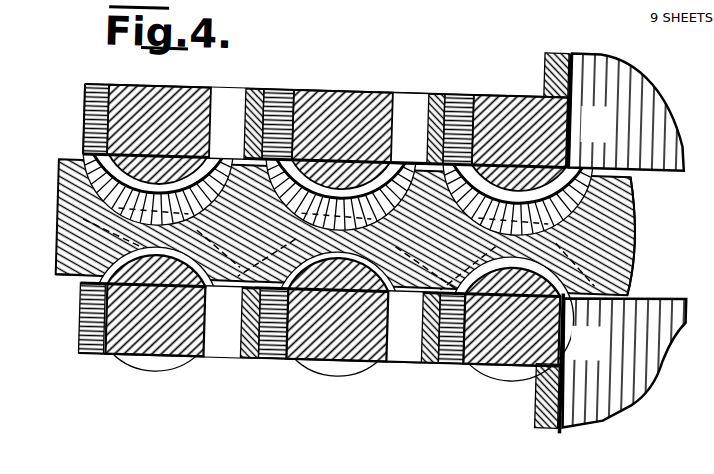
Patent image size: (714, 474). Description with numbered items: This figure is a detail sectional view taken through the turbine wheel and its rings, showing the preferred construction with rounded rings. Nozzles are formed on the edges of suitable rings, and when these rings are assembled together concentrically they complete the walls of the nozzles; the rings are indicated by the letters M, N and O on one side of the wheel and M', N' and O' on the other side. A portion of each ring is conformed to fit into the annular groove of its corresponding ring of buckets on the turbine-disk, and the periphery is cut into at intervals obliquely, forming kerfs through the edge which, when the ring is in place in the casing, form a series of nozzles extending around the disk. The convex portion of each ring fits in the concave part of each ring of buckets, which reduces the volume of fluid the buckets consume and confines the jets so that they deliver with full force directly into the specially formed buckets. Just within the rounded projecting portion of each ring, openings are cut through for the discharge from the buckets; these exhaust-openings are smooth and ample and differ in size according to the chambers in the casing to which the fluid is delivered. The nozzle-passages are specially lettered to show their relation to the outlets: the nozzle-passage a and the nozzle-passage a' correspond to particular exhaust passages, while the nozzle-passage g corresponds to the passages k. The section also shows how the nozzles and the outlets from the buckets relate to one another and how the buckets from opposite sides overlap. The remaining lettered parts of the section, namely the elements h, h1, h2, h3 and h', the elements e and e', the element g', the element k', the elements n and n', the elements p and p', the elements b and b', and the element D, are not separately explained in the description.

The nozzle-passage a is at (96, 104).
The end wall h1 is at (86, 138).
The bearing shell lining h2 is at (170, 181).
The recess h3 is at (222, 156).
The recess bottom h is at (409, 145).
The ring M is at (170, 119).
The spacer ring e is at (250, 106).
The nozzle-passage g is at (278, 107).
The ring N is at (342, 121).
The passages k is at (410, 110).
The collar n is at (459, 111).
The ring O is at (520, 122).
The upper hub p is at (628, 112).
The frame body b is at (333, 210).
The frame body lower part b' is at (59, 297).
The frame D is at (641, 229).
The nozzle-passage a' is at (93, 339).
The ring M' is at (155, 334).
The recess h' is at (223, 321).
The spacer ring e' is at (237, 340).
The collar g' is at (272, 345).
The ring N' is at (337, 337).
The recess k' is at (404, 352).
The collar n' is at (451, 351).
The ring O' is at (511, 348).
The lower hub p' is at (624, 362).